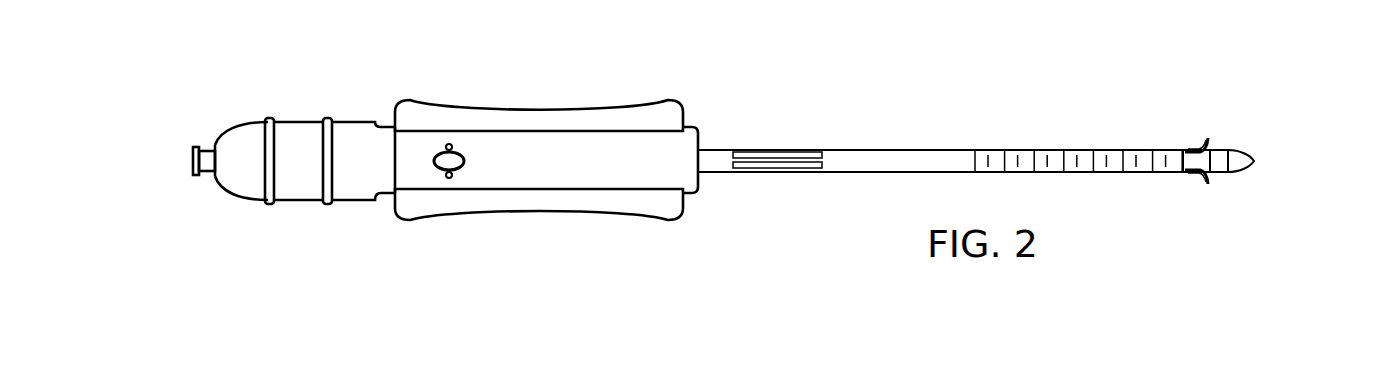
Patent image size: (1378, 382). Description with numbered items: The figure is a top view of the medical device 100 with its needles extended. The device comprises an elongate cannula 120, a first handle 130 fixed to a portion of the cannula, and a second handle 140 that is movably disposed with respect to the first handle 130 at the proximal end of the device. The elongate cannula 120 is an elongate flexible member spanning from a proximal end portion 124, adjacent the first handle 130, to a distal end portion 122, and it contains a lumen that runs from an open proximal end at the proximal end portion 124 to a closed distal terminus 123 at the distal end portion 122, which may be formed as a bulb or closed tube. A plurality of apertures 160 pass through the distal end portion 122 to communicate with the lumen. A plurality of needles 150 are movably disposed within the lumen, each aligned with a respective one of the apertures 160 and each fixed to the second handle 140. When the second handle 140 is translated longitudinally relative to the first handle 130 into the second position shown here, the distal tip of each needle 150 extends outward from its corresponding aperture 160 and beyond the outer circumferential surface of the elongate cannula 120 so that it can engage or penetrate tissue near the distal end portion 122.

The medical device 100 is at (747, 141).
The elongate cannula 120 is at (963, 157).
The distal end portion 122 is at (1185, 150).
The closed distal terminus 123 is at (1310, 127).
The proximal end portion 124 is at (698, 172).
The first handle 130 is at (653, 220).
The second handle 140 is at (238, 191).
The plurality of needles 150 is at (1205, 144).
The plurality of apertures 160 is at (1207, 146).